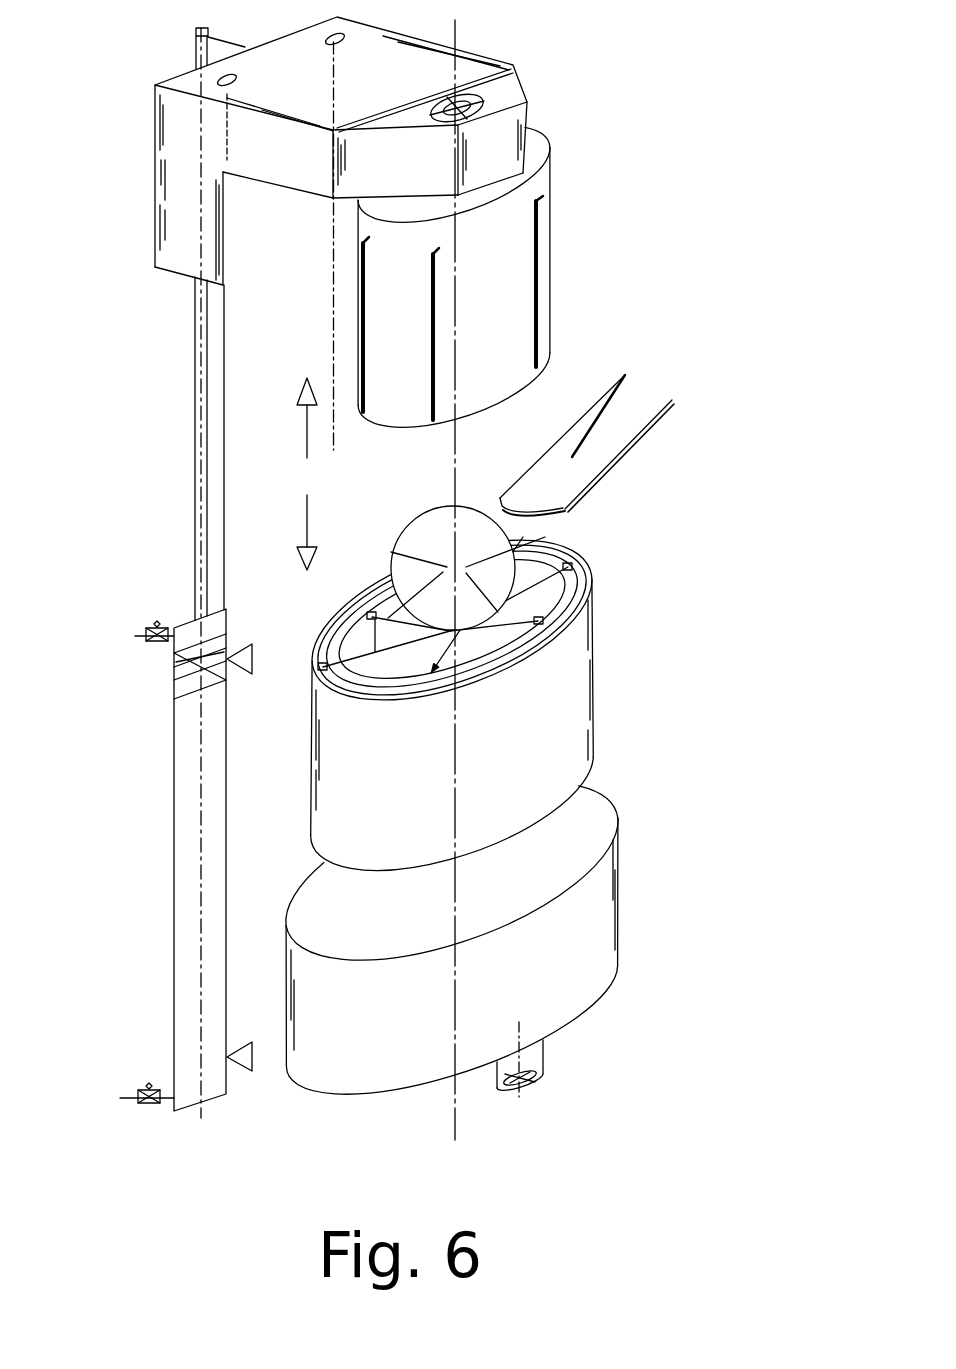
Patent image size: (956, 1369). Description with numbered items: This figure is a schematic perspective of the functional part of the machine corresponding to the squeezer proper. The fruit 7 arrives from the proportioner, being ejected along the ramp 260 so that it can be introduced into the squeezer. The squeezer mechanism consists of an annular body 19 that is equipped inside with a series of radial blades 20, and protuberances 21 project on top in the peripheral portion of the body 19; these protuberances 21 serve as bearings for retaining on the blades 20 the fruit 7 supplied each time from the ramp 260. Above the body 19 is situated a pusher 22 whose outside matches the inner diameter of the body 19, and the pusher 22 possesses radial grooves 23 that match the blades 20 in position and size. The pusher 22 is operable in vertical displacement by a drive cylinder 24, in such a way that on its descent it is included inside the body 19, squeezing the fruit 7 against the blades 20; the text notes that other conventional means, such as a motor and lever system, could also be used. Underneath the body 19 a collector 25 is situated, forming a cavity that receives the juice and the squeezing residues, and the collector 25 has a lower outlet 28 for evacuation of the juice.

The fruit 7 is at (477, 508).
The annular body 19 is at (597, 716).
The radial blades 20 is at (612, 447).
The protuberances 21 is at (550, 598).
The pusher 22 is at (558, 230).
The radial grooves 23 is at (443, 245).
The drive cylinder 24 is at (172, 879).
The collector 25 is at (623, 890).
The lower outlet 28 is at (549, 1051).
The ramp 260 is at (627, 372).